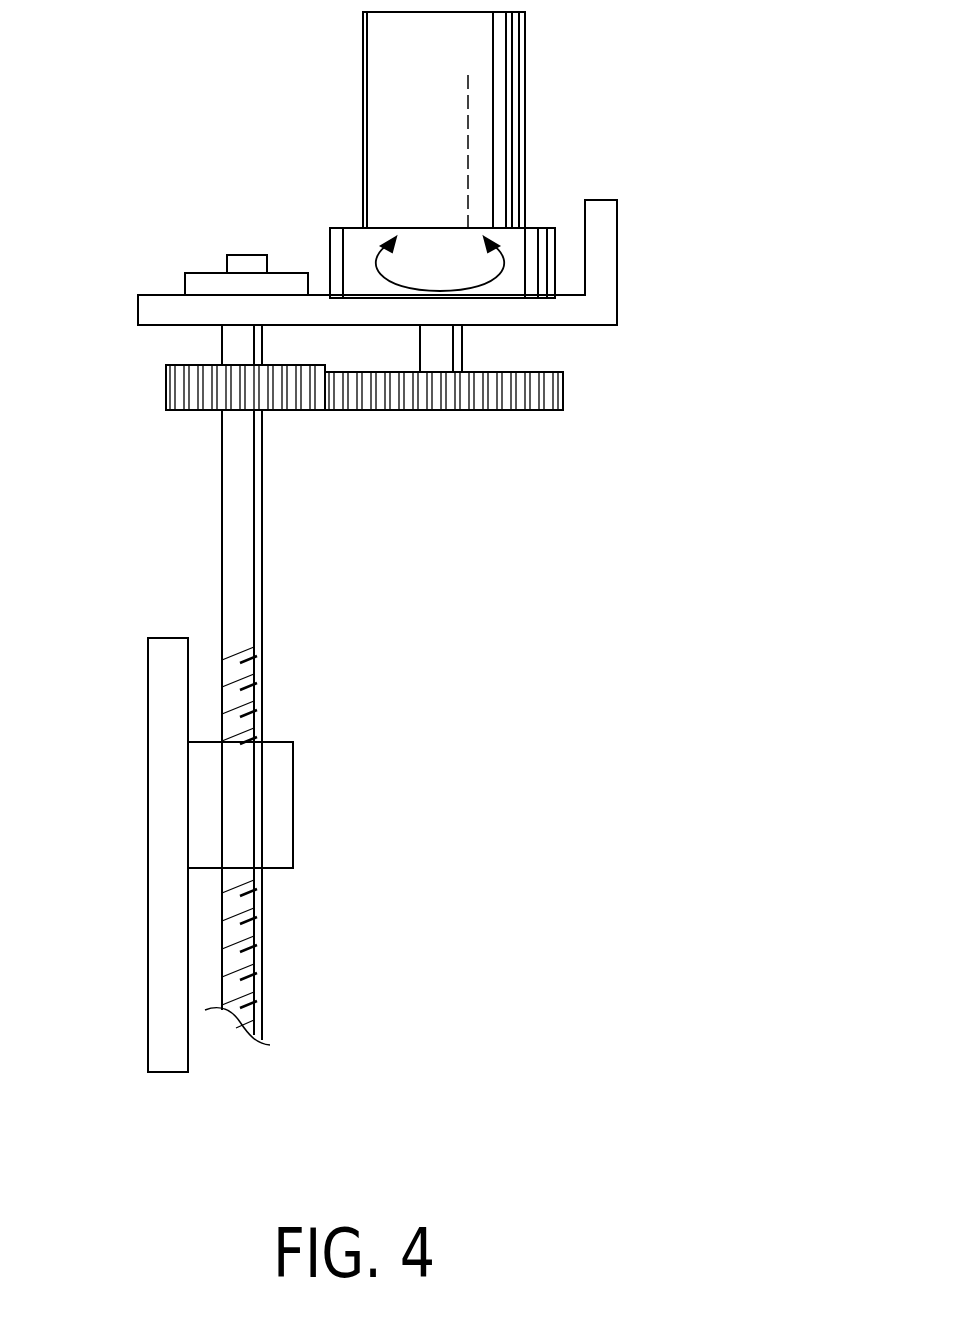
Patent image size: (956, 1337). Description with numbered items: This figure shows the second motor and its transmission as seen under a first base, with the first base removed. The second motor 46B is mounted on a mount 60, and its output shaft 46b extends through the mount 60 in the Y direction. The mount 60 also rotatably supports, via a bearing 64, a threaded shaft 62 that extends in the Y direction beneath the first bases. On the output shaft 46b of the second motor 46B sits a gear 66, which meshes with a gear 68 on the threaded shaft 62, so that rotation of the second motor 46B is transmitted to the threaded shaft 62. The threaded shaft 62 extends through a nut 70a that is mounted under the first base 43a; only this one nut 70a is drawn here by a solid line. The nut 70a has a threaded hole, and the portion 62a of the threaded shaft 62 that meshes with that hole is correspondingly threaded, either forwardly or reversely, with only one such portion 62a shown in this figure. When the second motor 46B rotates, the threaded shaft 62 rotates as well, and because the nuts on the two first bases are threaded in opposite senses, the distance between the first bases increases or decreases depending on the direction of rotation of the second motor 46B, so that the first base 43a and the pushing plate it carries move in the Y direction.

The second motor 46B is at (526, 48).
The mount 60 is at (617, 276).
The bearing 64 is at (197, 272).
The output shaft 46b is at (462, 347).
The gear 66 is at (452, 410).
The gear 68 is at (290, 410).
The threaded shaft 62 is at (235, 508).
The threaded portion of threaded shaft 62a is at (262, 706).
The nut 70a is at (278, 820).
The first base 43a is at (150, 697).